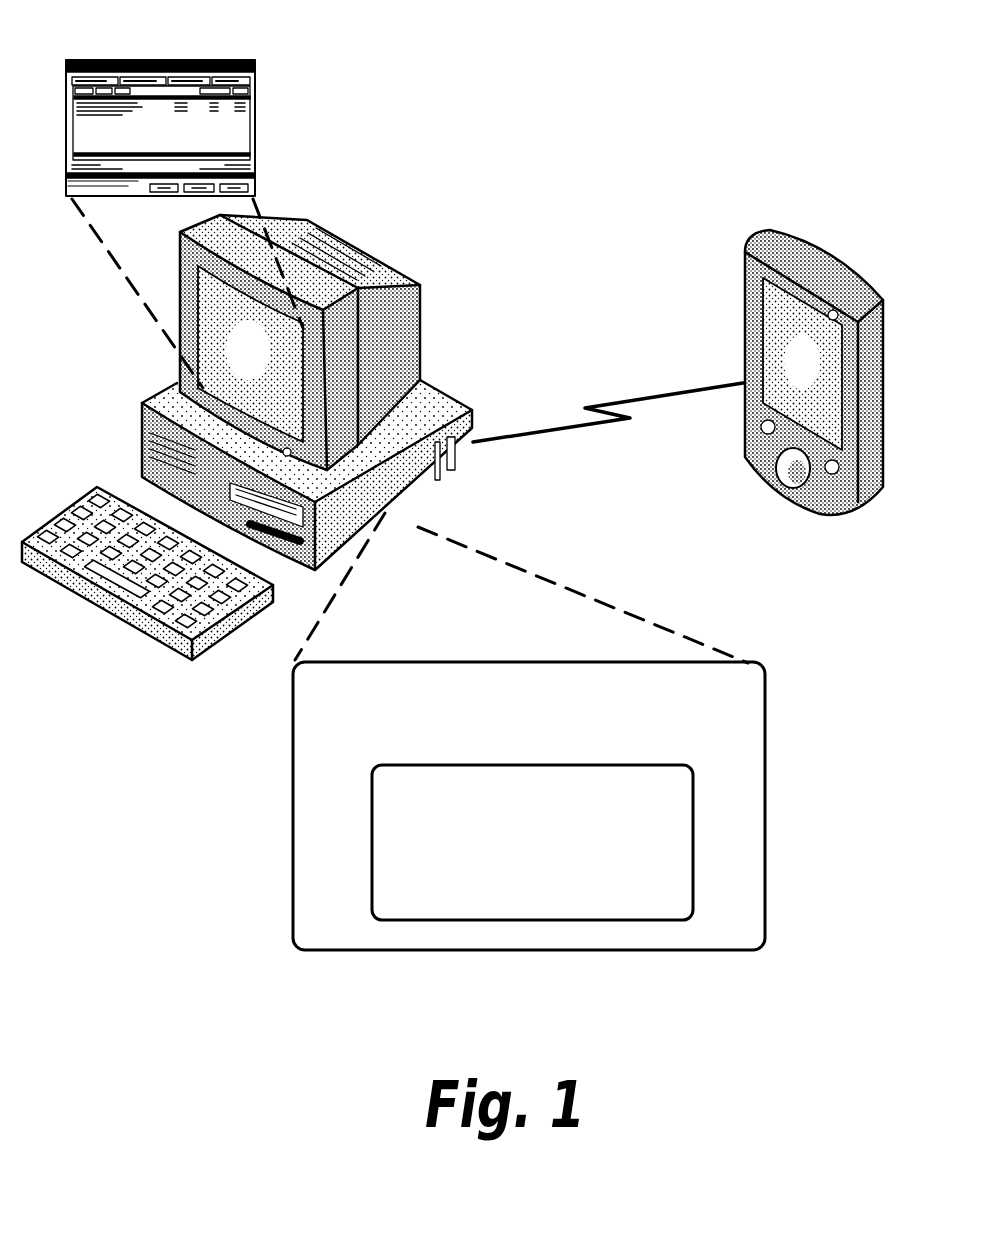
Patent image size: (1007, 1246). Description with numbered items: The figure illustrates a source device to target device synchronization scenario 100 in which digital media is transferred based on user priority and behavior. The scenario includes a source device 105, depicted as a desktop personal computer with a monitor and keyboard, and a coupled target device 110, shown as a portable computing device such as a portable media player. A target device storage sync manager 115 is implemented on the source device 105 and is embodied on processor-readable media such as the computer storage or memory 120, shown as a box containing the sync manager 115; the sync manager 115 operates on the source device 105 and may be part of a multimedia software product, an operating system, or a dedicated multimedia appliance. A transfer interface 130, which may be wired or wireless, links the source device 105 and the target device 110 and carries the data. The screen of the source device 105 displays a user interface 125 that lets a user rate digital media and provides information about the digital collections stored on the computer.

The source device to target device synchronization scenario 100 is at (498, 54).
The source device 105 is at (140, 435).
The target device 110 is at (745, 250).
The target device storage sync manager 115 is at (555, 892).
The memory 120 is at (552, 736).
The user interface 125 is at (157, 60).
The transfer interface 130 is at (633, 400).